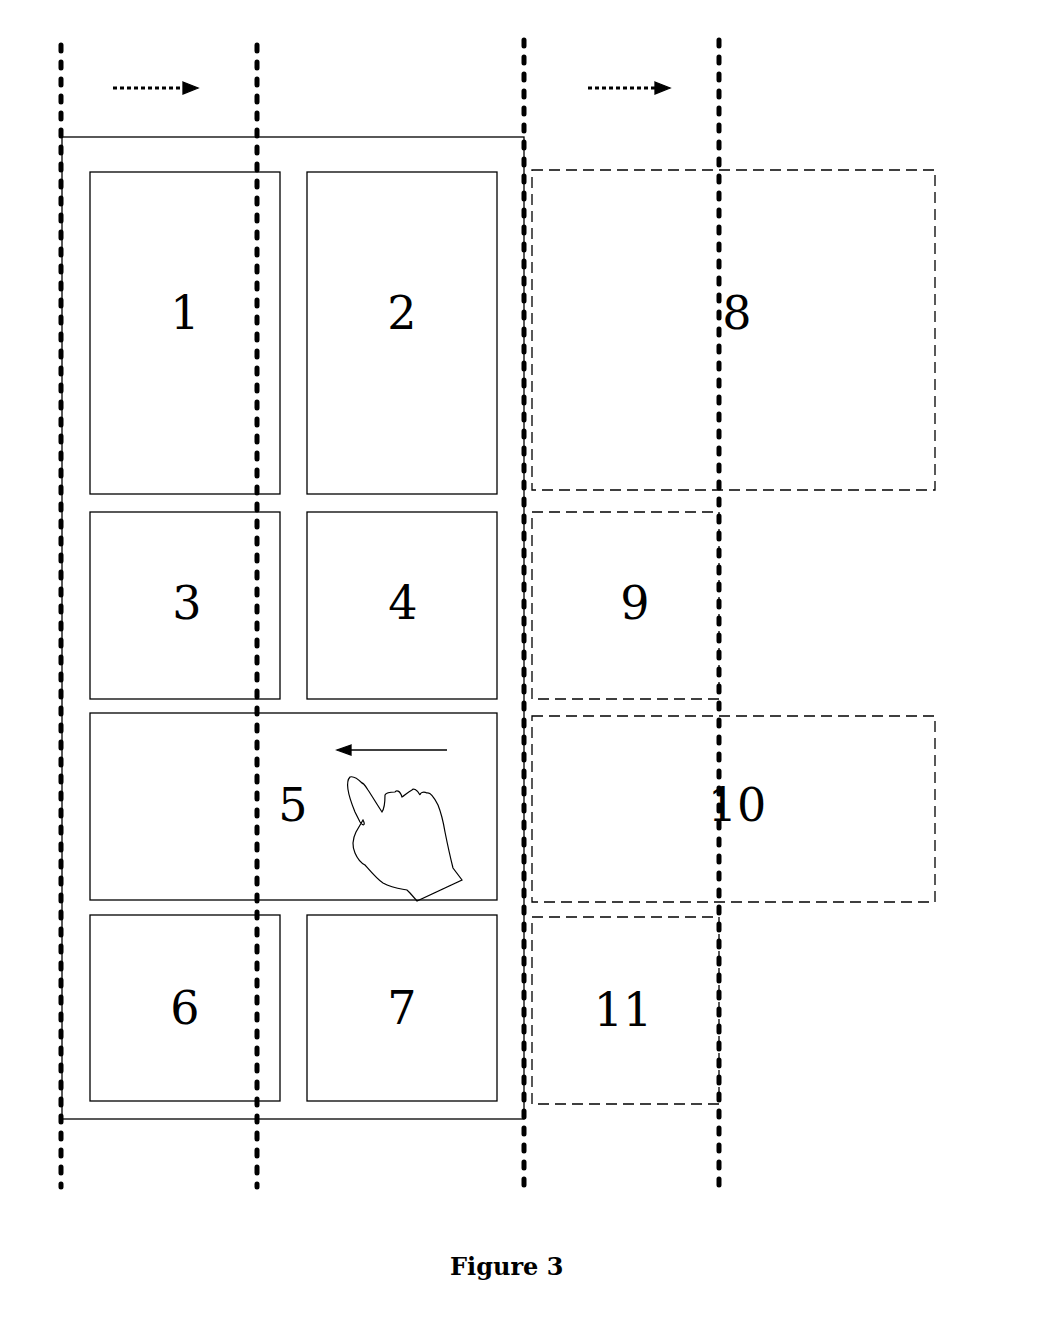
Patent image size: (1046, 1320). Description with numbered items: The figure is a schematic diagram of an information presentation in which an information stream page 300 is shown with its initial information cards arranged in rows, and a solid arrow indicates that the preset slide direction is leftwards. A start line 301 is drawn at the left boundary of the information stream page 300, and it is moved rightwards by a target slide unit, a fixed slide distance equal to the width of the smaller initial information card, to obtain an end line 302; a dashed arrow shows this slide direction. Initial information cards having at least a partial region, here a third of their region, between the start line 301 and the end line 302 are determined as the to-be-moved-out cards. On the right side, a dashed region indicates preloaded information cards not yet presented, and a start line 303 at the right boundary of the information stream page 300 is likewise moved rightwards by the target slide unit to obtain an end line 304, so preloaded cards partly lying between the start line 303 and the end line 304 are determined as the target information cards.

The information stream page 300 is at (374, 135).
The start line 301 is at (64, 64).
The end line 302 is at (260, 64).
The start line 303 is at (527, 62).
The end line 304 is at (722, 62).